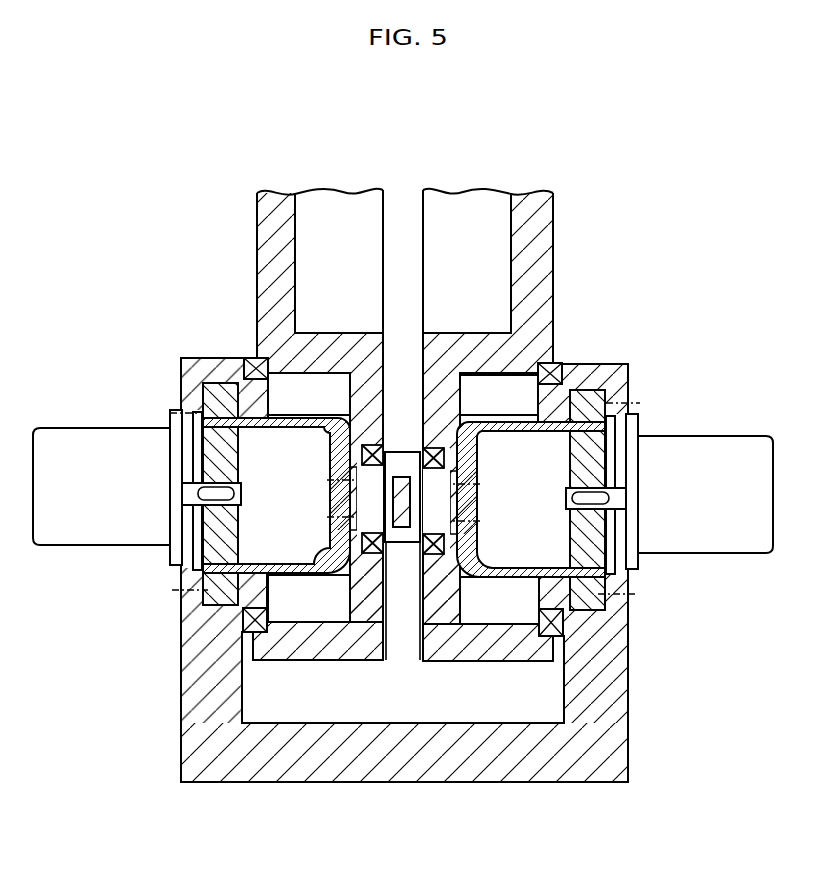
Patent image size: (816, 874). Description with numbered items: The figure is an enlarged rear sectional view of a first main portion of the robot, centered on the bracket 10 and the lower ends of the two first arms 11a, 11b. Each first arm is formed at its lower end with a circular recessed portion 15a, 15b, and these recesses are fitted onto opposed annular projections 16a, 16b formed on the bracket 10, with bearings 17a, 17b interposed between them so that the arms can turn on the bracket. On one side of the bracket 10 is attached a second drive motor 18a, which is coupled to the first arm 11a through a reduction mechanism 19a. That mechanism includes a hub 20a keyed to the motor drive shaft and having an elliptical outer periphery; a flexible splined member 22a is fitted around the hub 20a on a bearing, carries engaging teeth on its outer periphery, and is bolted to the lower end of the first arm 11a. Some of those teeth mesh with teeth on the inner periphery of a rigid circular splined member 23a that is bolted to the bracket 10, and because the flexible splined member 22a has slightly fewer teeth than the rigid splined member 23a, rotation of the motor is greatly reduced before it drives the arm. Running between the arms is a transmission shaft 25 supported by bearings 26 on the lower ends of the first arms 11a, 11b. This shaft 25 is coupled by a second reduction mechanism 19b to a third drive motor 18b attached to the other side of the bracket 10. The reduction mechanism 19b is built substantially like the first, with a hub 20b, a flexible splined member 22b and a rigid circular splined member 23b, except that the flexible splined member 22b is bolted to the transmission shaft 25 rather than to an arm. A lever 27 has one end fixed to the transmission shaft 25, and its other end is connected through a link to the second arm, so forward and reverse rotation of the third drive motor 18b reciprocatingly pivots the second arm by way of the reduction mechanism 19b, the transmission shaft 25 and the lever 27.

The bracket 10 is at (410, 784).
The first arm 11a is at (554, 258).
The first arm 11b is at (270, 257).
The circular recessed portion 15a is at (507, 625).
The circular recessed portion 15b is at (332, 620).
The annular projection 16a is at (540, 402).
The annular projection 16b is at (270, 393).
The bearing 17a is at (556, 366).
The bearing 17b is at (243, 624).
The second drive motor 18a is at (720, 452).
The third drive motor 18b is at (105, 445).
The reduction mechanism 19a is at (460, 624).
The reduction mechanism 19b is at (284, 604).
The hub 20a is at (600, 545).
The hub 20b is at (178, 560).
The flexible splined member 22a is at (476, 588).
The flexible splined member 22b is at (287, 586).
The rigid circular splined member 23a is at (618, 620).
The rigid circular splined member 23b is at (200, 604).
The transmission shaft 25 is at (403, 545).
The bearings 26 is at (420, 452).
The lever 27 is at (410, 500).